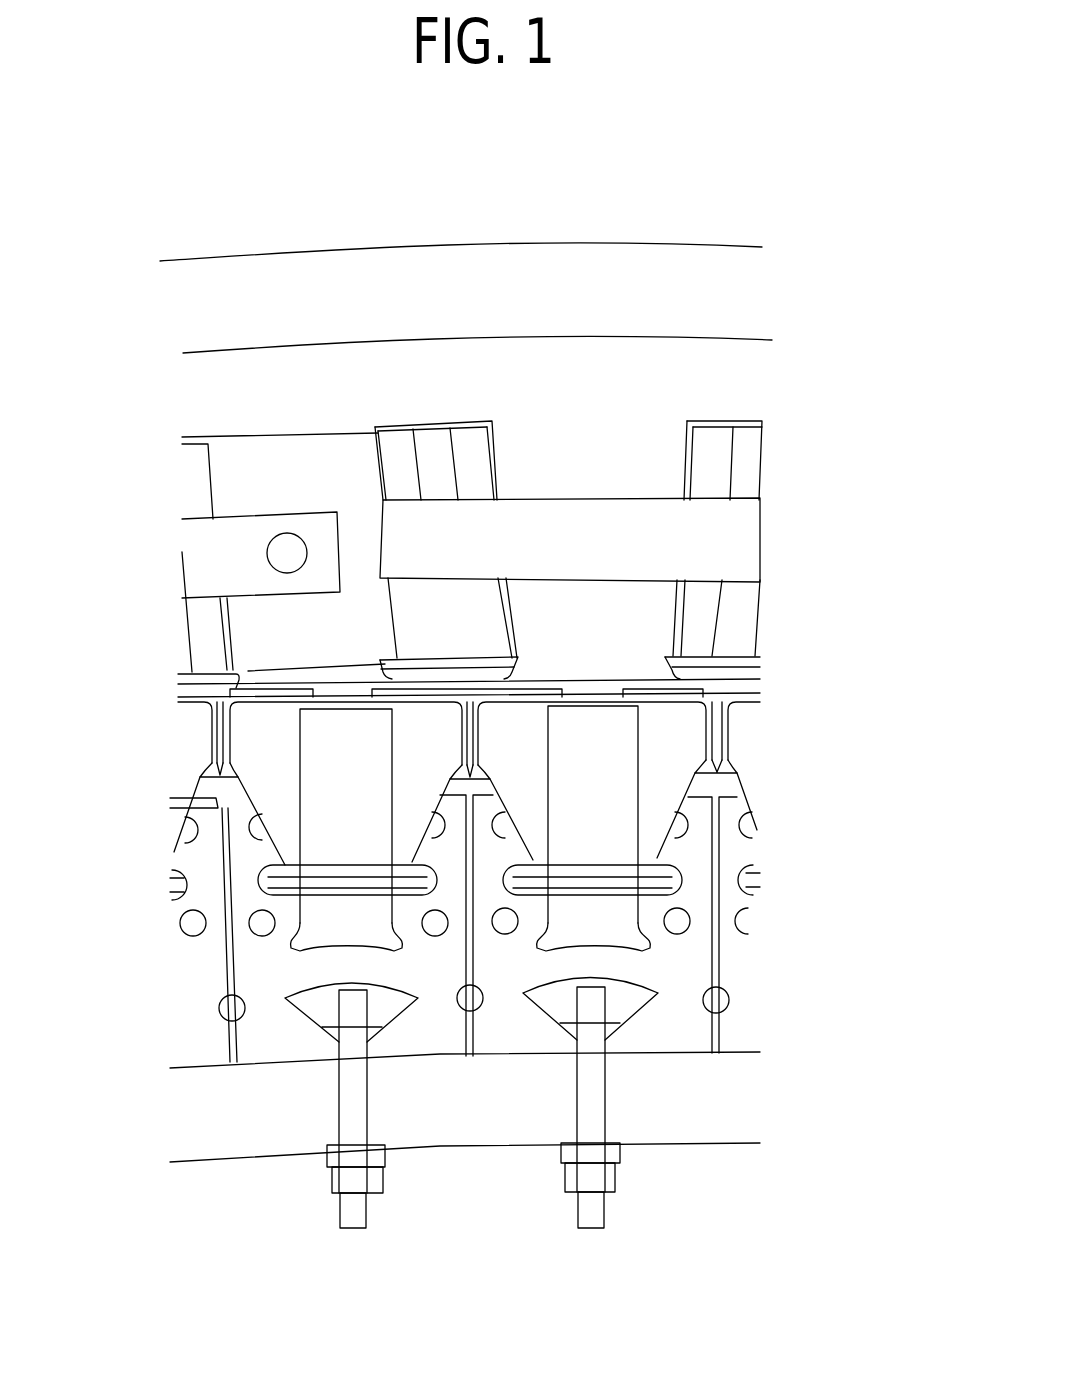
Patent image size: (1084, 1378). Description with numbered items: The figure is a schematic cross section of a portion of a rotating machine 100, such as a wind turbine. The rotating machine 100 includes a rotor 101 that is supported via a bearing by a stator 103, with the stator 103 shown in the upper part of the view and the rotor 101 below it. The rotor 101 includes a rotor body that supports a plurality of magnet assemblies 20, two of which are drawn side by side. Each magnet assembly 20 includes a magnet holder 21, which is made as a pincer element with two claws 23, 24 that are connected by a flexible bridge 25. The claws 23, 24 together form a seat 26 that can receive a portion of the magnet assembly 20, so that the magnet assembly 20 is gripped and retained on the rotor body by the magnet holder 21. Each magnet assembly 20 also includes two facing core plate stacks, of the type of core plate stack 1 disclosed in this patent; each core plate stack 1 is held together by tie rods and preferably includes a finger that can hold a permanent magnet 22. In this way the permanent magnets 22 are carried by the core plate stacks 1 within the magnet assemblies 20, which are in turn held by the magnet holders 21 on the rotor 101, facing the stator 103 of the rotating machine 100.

The rotating machine 100 is at (536, 196).
The stator 103 is at (723, 386).
The rotor 101 is at (514, 1052).
The core plate stack 1 is at (458, 736).
The magnet assembly 20 is at (255, 850).
The magnet holder 21 is at (464, 1140).
The permanent magnet 22 is at (316, 728).
The claw 23 is at (408, 764).
The claw 24 is at (450, 825).
The flexible bridge 25 is at (333, 972).
The seat 26 is at (367, 855).